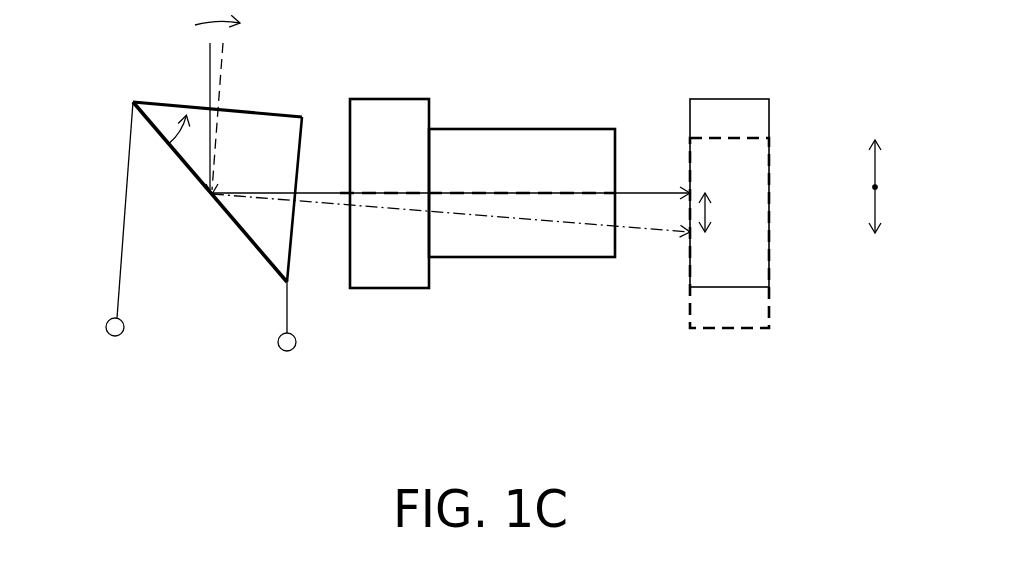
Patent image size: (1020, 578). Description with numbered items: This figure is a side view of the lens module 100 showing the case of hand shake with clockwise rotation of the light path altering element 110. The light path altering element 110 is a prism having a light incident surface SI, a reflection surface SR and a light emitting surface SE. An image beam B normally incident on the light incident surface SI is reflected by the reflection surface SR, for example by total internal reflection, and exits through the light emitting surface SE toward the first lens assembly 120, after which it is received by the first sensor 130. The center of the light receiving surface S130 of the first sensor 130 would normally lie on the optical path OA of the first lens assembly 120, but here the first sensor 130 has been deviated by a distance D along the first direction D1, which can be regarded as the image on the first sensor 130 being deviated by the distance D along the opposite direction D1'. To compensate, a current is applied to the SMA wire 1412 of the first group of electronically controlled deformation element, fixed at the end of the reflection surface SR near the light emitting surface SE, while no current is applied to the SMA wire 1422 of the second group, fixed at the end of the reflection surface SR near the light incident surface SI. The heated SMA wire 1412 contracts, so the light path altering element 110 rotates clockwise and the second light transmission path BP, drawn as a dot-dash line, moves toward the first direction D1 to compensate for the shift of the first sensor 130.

The lens module 100 is at (875, 418).
The light path altering element 110 is at (232, 221).
The first lens assembly 120 is at (548, 258).
The first sensor 130 is at (770, 170).
The SMA wire 1412 is at (285, 307).
The SMA wire 1422 is at (117, 298).
The image beam B is at (223, 63).
The reflection surface SR is at (176, 159).
The light incident surface SI is at (264, 111).
The light emitting surface SE is at (303, 132).
The optical path OA is at (518, 190).
The second light transmission path BP is at (655, 230).
The light receiving surface S130 is at (688, 117).
The distance D is at (720, 213).
The opposite direction D1' is at (879, 145).
The first direction D1 is at (876, 229).